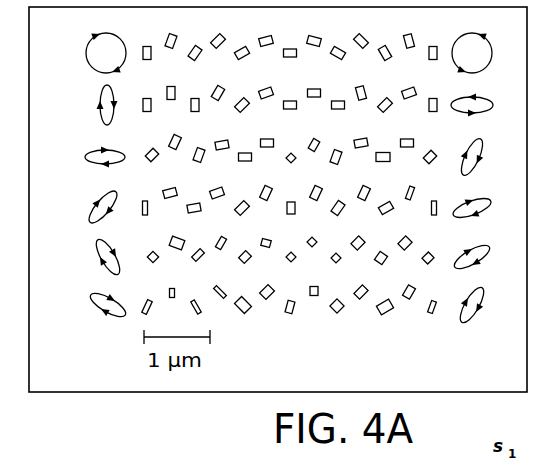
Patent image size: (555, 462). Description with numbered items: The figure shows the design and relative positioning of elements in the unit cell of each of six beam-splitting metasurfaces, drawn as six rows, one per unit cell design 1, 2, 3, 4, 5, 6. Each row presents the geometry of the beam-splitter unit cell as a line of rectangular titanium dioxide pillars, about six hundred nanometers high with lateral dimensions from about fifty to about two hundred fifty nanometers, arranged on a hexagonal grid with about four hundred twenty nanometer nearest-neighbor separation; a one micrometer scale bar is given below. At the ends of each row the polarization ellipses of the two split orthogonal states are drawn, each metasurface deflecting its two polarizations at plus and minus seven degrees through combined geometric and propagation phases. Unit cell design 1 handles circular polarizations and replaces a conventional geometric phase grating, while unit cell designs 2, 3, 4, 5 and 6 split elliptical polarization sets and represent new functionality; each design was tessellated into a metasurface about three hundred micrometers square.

The unit cell design 1 is at (274, 53).
The unit cell design 2 is at (275, 105).
The unit cell design 3 is at (273, 156).
The unit cell design 4 is at (276, 207).
The unit cell design 5 is at (276, 256).
The unit cell design 6 is at (274, 304).